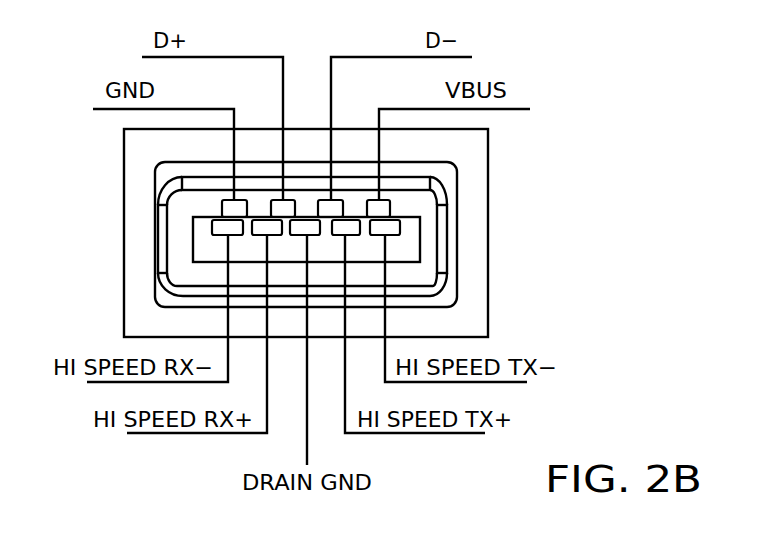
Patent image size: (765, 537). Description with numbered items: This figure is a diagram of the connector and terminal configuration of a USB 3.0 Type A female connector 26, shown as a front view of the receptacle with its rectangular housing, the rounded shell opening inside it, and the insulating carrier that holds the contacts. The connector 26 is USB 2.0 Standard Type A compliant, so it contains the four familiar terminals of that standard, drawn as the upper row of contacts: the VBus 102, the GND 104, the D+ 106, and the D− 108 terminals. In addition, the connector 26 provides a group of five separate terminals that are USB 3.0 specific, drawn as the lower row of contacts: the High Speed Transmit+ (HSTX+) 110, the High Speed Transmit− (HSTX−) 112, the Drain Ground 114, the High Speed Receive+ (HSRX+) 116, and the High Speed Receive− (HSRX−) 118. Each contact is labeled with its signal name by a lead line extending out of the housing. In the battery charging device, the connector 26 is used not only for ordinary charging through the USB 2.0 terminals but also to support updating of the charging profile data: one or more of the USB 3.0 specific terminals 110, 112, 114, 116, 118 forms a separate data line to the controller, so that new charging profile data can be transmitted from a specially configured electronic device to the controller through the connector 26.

The connector 26 is at (490, 238).
The VBus terminal 102 is at (383, 207).
The GND terminal 104 is at (230, 205).
The D+ terminal 106 is at (275, 203).
The D− terminal 108 is at (335, 205).
The High Speed Transmit+ (HSTX+) terminal 110 is at (392, 230).
The High Speed Transmit− (HSTX−) terminal 112 is at (355, 225).
The Drain Ground terminal 114 is at (312, 223).
The High Speed Receive+ (HSRX+) terminal 116 is at (257, 226).
The High Speed Receive− (HSRX−) terminal 118 is at (213, 230).